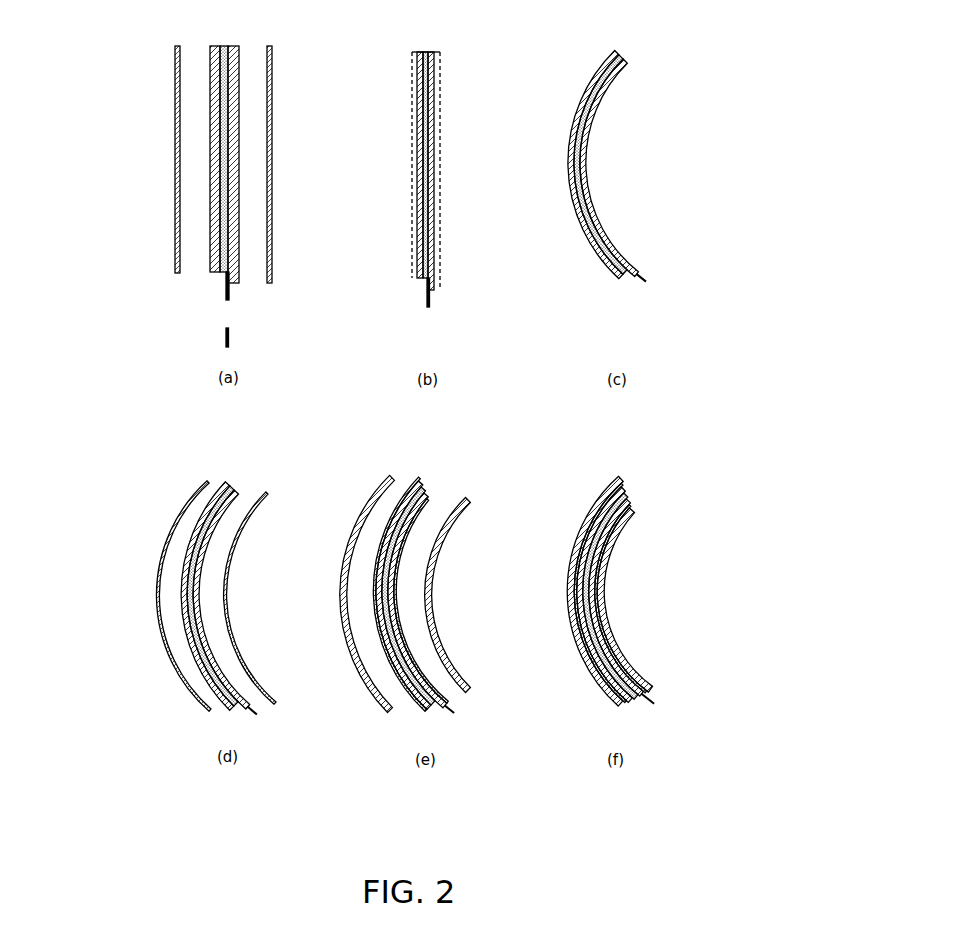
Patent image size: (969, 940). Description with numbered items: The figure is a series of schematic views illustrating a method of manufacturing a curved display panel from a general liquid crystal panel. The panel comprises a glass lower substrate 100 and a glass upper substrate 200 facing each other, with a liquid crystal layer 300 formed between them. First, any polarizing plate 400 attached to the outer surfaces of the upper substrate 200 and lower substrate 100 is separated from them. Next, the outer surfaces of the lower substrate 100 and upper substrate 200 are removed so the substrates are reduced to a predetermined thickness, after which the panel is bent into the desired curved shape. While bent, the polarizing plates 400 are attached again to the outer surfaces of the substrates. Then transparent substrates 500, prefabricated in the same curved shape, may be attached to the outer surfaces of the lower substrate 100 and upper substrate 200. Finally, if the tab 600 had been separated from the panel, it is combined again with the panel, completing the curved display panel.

The lower substrate 100 is at (214, 273).
The upper substrate 200 is at (236, 285).
The liquid crystal layer 300 is at (224, 46).
The polarizing plate 400 is at (176, 160).
The transparent substrate 500 is at (343, 585).
The tab 600 is at (230, 338).